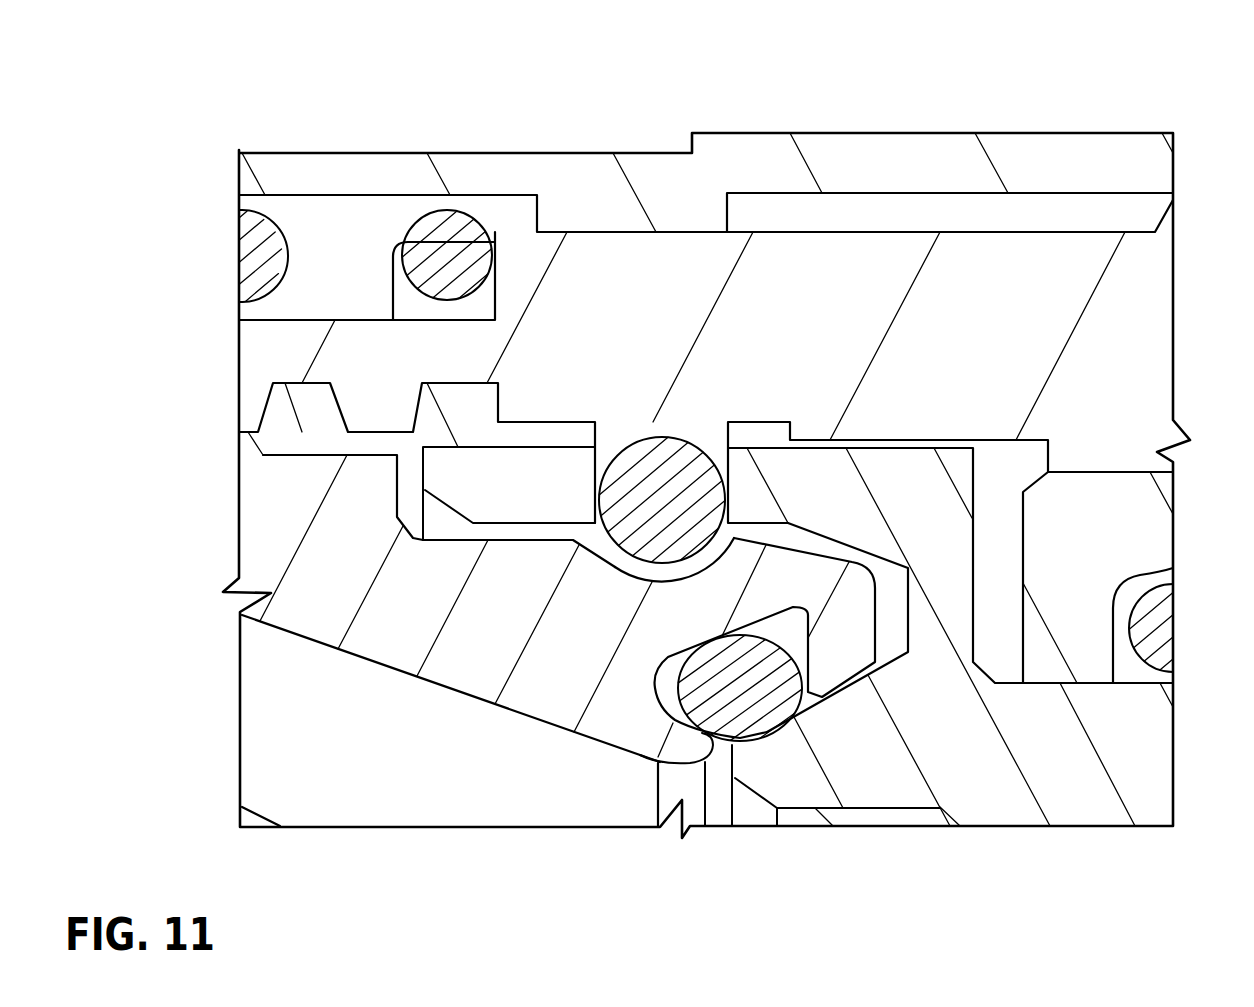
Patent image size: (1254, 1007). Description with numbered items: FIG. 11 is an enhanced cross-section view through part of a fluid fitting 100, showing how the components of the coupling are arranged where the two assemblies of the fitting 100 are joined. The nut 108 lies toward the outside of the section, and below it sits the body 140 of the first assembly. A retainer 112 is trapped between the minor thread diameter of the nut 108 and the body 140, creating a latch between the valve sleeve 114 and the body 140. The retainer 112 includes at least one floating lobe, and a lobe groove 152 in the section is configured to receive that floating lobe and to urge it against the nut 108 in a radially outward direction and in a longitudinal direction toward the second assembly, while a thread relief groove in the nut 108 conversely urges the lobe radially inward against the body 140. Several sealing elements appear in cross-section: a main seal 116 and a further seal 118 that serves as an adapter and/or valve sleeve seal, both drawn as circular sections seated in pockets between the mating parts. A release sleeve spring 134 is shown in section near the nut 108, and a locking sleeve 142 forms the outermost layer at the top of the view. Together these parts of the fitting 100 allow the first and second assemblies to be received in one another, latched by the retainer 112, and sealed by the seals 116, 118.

The fluid fitting 100 is at (800, 96).
The nut 108 is at (373, 367).
The retainer 112 is at (634, 574).
The valve sleeve 114 is at (963, 727).
The seal 116 is at (760, 710).
The seal 118 is at (1152, 635).
The release sleeve spring 134 is at (427, 243).
The body 140 is at (310, 523).
The locking sleeve 142 is at (513, 153).
The lobe groove 152 is at (590, 567).